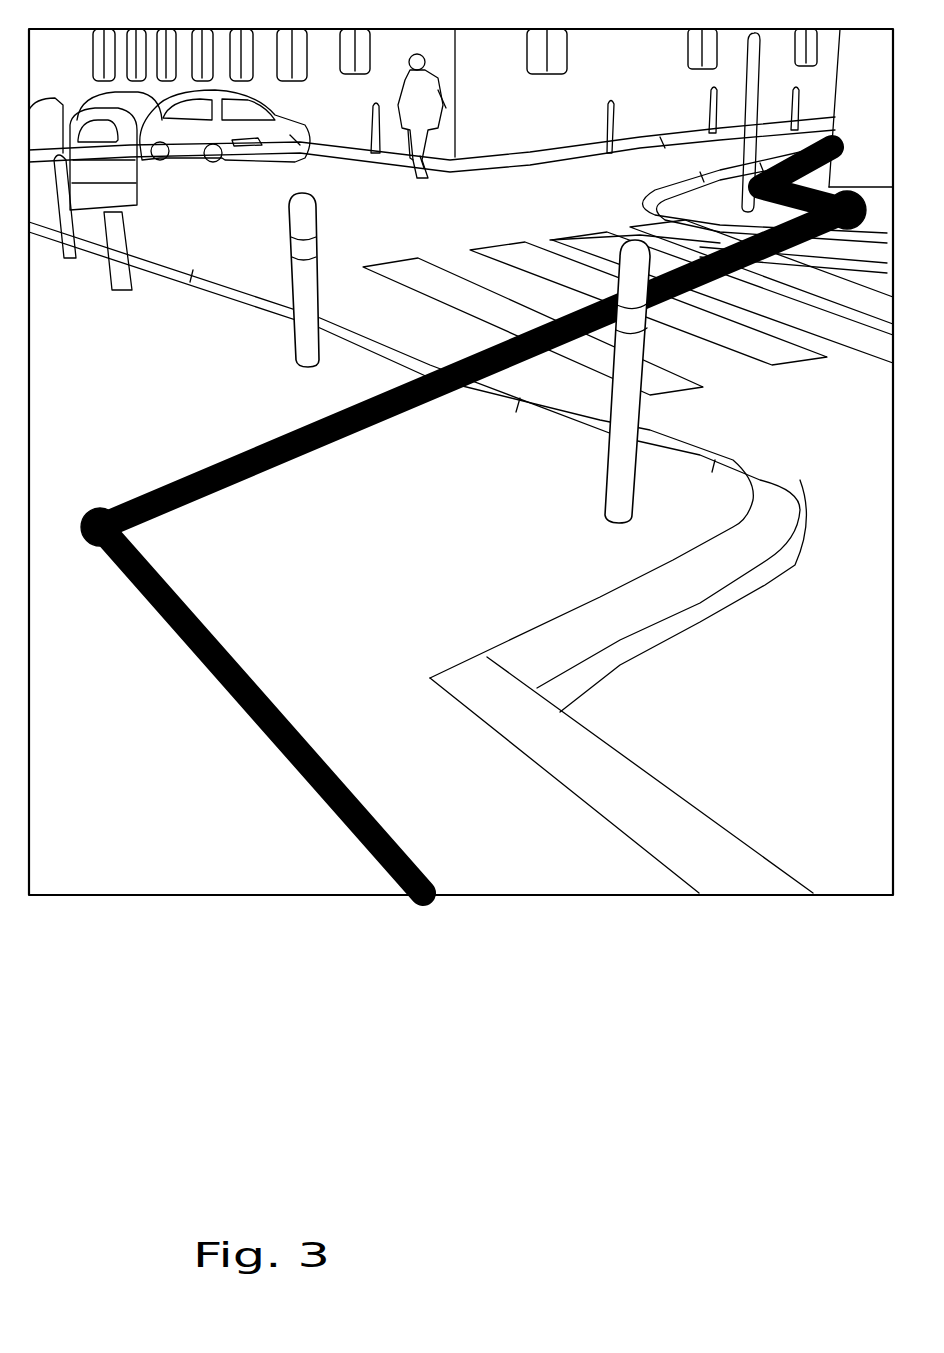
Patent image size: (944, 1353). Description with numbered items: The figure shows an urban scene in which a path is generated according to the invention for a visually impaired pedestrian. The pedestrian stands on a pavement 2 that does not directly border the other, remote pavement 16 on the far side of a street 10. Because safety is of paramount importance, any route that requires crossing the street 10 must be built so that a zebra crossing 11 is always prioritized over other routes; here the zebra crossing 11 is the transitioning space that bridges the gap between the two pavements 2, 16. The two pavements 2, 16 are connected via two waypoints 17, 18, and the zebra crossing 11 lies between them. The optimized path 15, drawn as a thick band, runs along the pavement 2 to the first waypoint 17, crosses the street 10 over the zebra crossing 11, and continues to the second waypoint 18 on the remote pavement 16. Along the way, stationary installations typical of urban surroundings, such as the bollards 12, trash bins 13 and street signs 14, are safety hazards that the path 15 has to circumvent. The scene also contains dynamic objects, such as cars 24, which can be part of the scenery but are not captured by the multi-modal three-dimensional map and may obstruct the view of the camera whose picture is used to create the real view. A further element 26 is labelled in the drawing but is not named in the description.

The pavement 2 is at (485, 790).
The street 10 is at (435, 227).
The zebra crossing 11 is at (560, 370).
The bollard 12 is at (627, 417).
The trash bin 13 is at (90, 167).
The street sign 14 is at (753, 205).
The optimized path 15 is at (237, 698).
The remote pavement 16 is at (873, 222).
The waypoint 17 is at (103, 545).
The waypoint 18 is at (833, 125).
The car 24 is at (197, 133).
The pedestrian 26 is at (400, 120).